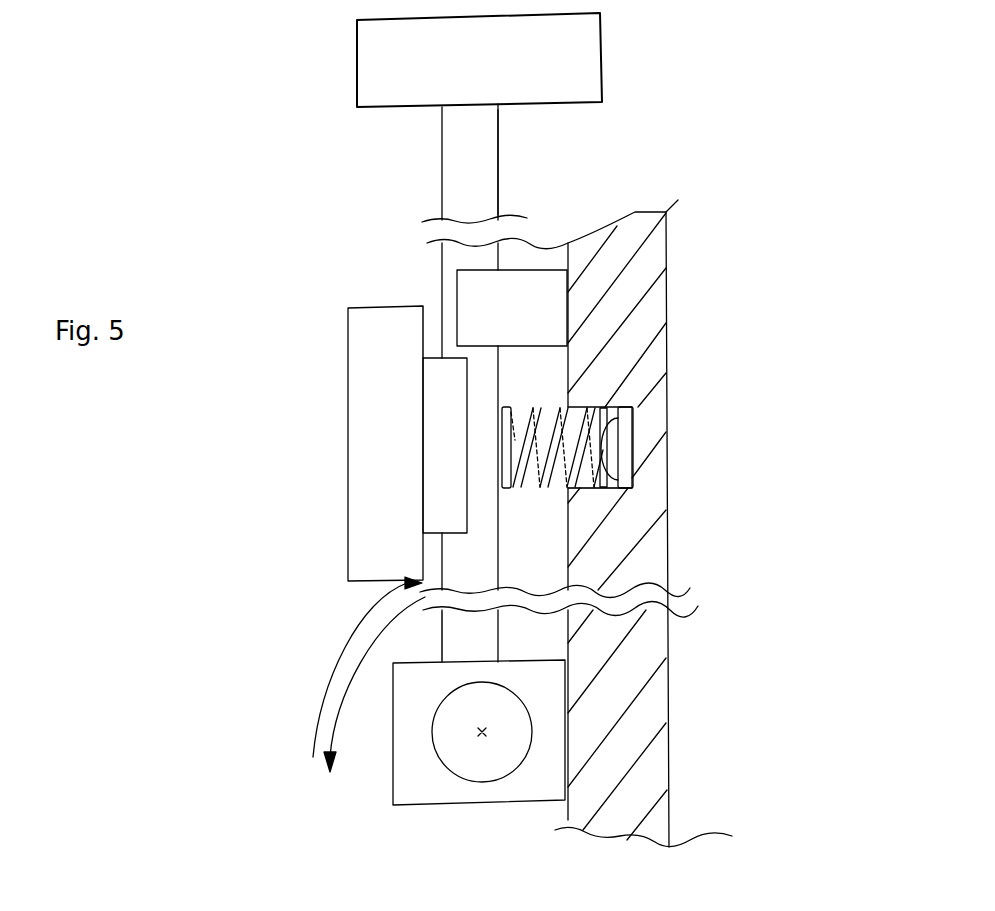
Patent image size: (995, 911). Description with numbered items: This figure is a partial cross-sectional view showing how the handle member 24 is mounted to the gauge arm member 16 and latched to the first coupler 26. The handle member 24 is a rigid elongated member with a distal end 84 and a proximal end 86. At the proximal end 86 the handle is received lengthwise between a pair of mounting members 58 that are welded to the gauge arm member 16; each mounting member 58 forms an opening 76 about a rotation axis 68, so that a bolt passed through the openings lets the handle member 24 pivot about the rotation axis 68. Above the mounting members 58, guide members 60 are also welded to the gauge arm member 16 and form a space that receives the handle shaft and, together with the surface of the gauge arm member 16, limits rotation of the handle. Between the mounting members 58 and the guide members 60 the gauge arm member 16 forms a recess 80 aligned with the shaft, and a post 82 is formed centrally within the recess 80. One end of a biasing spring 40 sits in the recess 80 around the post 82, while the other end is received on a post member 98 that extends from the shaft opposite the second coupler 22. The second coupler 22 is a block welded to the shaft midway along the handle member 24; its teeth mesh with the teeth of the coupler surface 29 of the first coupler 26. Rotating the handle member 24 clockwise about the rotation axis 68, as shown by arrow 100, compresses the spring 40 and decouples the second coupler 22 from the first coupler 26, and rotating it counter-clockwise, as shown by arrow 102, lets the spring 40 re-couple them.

The gauge arm member 16 is at (628, 708).
The second coupler 22 is at (442, 473).
The handle member 24 is at (448, 178).
The first coupler 26 is at (350, 393).
The coupler surface 29 is at (422, 327).
The spring 40 is at (635, 478).
The mounting member 58 is at (512, 797).
The guide member 60 is at (530, 287).
The rotation axis 68 is at (480, 732).
The opening 76 is at (472, 776).
The recess 80 is at (615, 492).
The post 82 is at (630, 417).
The distal end 84 is at (488, 136).
The proximal end 86 is at (450, 637).
The post member 98 is at (512, 408).
The arrow 100 is at (340, 652).
The arrow 102 is at (342, 707).